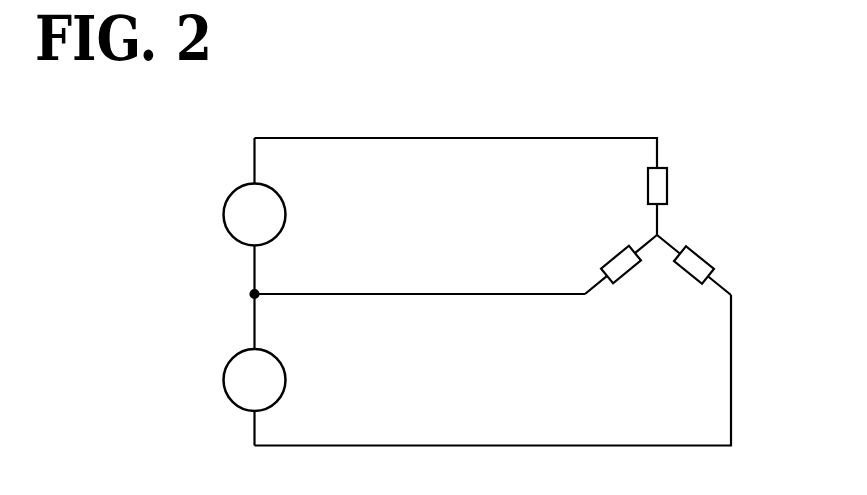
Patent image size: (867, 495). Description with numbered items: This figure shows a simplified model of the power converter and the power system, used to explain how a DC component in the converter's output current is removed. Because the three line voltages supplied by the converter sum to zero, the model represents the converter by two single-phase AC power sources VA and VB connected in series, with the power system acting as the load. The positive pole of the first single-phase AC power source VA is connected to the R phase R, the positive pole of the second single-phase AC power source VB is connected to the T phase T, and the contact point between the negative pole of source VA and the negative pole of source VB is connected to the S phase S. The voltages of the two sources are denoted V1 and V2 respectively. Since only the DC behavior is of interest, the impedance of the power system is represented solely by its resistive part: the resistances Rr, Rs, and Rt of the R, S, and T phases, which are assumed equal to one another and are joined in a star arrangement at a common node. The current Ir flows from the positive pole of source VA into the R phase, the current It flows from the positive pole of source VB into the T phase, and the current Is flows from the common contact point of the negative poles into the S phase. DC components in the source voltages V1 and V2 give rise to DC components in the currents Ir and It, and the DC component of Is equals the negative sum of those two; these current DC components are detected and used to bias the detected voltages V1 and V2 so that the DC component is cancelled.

The single-phase AC power source VA is at (243, 215).
The single-phase AC power source VB is at (243, 380).
The voltage of single-phase AC power source VA V1 is at (272, 215).
The voltage of single-phase AC power source VB V2 is at (272, 380).
The resistance of the R phase Rr is at (641, 201).
The resistance of the S phase Rs is at (621, 264).
The resistance of the T phase Rt is at (694, 265).
The R phase R is at (456, 132).
The S phase S is at (420, 274).
The T phase T is at (493, 370).
The current flowing to the R phase Ir is at (402, 125).
The current flowing to the S phase Is is at (402, 283).
The current flowing to the T phase It is at (402, 430).